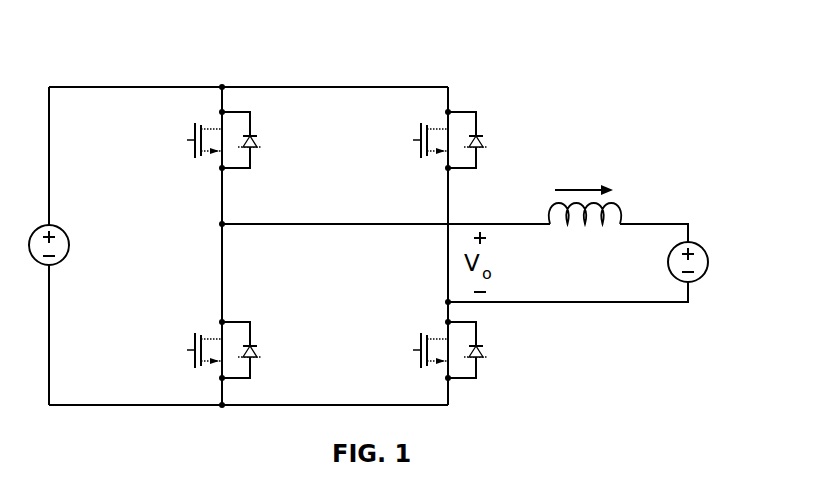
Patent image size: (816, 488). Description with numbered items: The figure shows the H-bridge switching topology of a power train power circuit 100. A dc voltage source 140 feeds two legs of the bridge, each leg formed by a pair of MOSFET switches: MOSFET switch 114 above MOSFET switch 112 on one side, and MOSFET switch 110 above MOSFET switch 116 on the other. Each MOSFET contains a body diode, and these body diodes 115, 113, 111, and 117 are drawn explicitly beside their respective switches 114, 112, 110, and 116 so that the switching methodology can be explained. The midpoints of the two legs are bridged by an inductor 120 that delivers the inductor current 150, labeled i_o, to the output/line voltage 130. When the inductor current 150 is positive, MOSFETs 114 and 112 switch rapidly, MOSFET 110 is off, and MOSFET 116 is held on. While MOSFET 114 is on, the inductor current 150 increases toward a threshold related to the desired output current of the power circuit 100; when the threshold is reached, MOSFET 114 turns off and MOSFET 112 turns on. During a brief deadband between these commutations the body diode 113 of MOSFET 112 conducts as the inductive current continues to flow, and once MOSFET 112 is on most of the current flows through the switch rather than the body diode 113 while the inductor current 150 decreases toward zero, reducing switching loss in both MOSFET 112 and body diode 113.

The power circuit 100 is at (75, 38).
The MOSFET switch 110 is at (486, 121).
The body diode 111 is at (509, 152).
The MOSFET switch 112 is at (261, 327).
The body diode 113 is at (284, 363).
The MOSFET switch 114 is at (257, 105).
The body diode 115 is at (283, 151).
The MOSFET switch 116 is at (450, 337).
The body diode 117 is at (509, 363).
The inductor 120 is at (622, 201).
The output/line voltage 130 is at (697, 279).
The dc voltage source 140 is at (62, 258).
The inductor current 150 is at (585, 152).